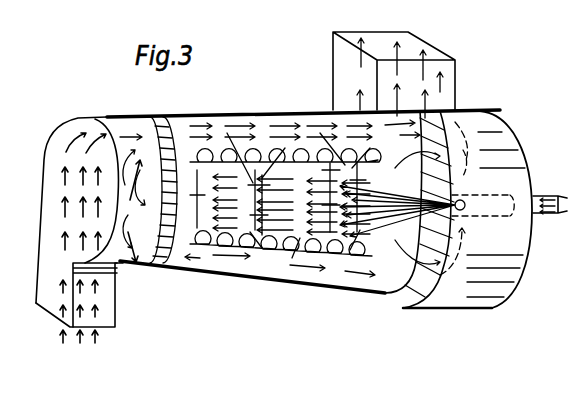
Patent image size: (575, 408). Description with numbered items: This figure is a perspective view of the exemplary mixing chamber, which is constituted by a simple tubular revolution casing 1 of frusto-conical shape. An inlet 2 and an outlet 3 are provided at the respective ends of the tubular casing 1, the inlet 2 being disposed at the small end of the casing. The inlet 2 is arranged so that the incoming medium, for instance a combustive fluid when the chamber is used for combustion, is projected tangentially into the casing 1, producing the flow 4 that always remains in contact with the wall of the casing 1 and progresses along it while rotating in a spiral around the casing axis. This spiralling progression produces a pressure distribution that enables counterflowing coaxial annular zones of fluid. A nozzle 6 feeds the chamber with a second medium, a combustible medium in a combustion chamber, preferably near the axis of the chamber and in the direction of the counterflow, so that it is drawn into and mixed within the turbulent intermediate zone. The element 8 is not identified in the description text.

The tubular revolution casing 1 is at (183, 266).
The inlet 2 is at (108, 315).
The outlet 3 is at (454, 73).
The tangential flow of first medium 4 is at (70, 252).
The nozzle 6 is at (491, 204).
The helical coil 8 is at (292, 210).